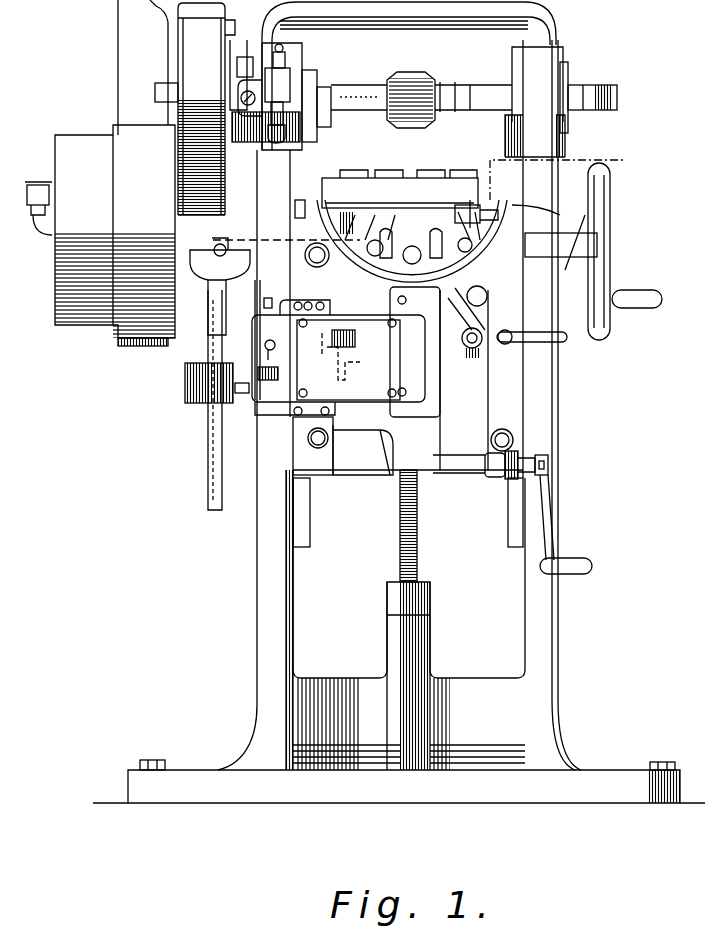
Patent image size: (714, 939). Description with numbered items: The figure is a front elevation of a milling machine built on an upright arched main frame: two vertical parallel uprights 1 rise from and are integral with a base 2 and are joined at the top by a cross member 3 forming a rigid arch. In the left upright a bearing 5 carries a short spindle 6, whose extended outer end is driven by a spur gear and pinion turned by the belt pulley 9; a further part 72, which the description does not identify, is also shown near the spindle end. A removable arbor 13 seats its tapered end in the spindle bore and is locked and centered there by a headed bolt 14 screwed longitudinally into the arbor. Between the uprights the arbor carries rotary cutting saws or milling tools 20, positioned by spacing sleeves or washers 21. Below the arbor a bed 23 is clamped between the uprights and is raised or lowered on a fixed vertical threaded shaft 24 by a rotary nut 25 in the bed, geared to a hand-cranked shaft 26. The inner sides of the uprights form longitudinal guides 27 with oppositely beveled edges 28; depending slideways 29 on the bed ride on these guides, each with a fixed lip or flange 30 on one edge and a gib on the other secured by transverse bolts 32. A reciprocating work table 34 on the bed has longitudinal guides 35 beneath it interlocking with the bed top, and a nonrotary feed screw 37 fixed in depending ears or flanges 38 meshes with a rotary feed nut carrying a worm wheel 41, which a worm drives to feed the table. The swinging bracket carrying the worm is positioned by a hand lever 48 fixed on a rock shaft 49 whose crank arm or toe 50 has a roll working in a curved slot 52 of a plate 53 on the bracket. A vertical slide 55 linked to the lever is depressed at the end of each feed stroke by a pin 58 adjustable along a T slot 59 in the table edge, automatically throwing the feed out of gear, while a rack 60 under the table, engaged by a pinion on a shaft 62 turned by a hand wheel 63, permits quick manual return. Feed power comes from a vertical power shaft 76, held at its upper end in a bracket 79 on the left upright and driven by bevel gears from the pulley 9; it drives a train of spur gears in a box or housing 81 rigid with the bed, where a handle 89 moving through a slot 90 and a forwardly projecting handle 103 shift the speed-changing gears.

The uprights 1 is at (553, 414).
The base 2 is at (580, 778).
The cross member 3 is at (424, 125).
The bearing 5 is at (230, 50).
The spindle 6 is at (320, 76).
The belt pulley 9 is at (100, 235).
The arbor 13 is at (618, 96).
The headed bolt 14 is at (165, 88).
The milling tools 20 is at (420, 72).
The spacing sleeves 21 is at (372, 112).
The bed 23 is at (456, 380).
The threaded shaft 24 is at (418, 548).
The rotary nut 25 is at (395, 448).
The shaft 26 is at (470, 473).
The longitudinal guides 27 is at (302, 200).
The longitudinal edges 28 is at (520, 500).
The slideways 29 is at (515, 395).
The lip 30 is at (296, 465).
The transverse bolts 32 is at (305, 260).
The work table 34 is at (400, 189).
The guides 35 is at (425, 222).
The feed screw 37 is at (412, 241).
The ears 38 is at (373, 259).
The worm wheel 41 is at (411, 243).
The hand lever 48 is at (567, 340).
The rock shaft 49 is at (505, 344).
The crank arm 50 is at (475, 320).
The curved slot 52 is at (460, 330).
The plate 53 is at (488, 293).
The slide 55 is at (561, 237).
The pin 58 is at (540, 200).
The T slot 59 is at (470, 205).
The rack 60 is at (464, 244).
The shaft 62 is at (580, 222).
The hand wheel 63 is at (612, 220).
The collar 72 is at (338, 90).
The power shaft 76 is at (568, 66).
The bracket 79 is at (210, 294).
The box 81 is at (165, 405).
The handle 89 is at (258, 390).
The slot 90 is at (262, 348).
The handle 103 is at (357, 328).